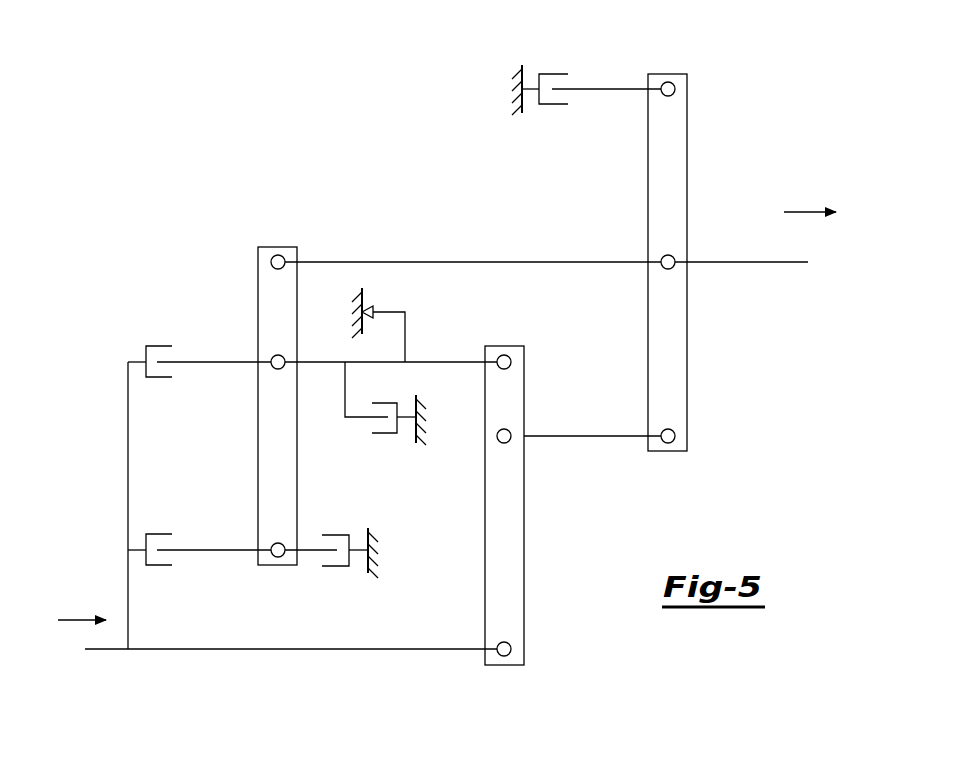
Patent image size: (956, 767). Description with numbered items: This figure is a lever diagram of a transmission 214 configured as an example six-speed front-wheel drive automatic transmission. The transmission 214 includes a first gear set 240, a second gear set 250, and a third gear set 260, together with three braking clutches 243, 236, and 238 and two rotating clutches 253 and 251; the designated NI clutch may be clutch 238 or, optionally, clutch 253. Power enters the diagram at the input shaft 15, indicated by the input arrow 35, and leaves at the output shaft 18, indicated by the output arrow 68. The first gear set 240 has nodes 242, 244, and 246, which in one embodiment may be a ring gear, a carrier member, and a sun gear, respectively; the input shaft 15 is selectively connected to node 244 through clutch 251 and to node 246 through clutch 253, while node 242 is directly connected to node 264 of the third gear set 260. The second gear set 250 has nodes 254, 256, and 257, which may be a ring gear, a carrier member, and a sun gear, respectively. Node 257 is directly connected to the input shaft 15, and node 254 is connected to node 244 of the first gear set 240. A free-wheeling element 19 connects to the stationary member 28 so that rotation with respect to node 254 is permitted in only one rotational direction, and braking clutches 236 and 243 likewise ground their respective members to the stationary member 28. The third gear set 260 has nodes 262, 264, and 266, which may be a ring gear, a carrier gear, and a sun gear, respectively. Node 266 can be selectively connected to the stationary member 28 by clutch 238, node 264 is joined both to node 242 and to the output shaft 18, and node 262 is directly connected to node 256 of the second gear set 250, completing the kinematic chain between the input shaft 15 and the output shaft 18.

The transmission 214 is at (186, 190).
The input shaft 15 is at (100, 650).
The input torque 35 is at (69, 619).
The first gear set 240 is at (258, 447).
The node 242 is at (278, 256).
The node 244 is at (285, 364).
The node 246 is at (278, 557).
The rotating clutch 251 is at (147, 338).
The rotating clutch 253 is at (161, 522).
The free-wheeling element 19 is at (378, 300).
The braking clutch 236 is at (363, 398).
The braking clutch 243 is at (333, 518).
The braking clutch 238 is at (540, 48).
The stationary member 28 is at (517, 93).
The second gear set 250 is at (524, 535).
The node 254 is at (511, 362).
The node 256 is at (511, 436).
The node 257 is at (511, 649).
The third gear set 260 is at (687, 353).
The node 266 is at (668, 82).
The node 264 is at (665, 256).
The node 262 is at (668, 444).
The output shaft 18 is at (758, 262).
The output torque 68 is at (820, 211).